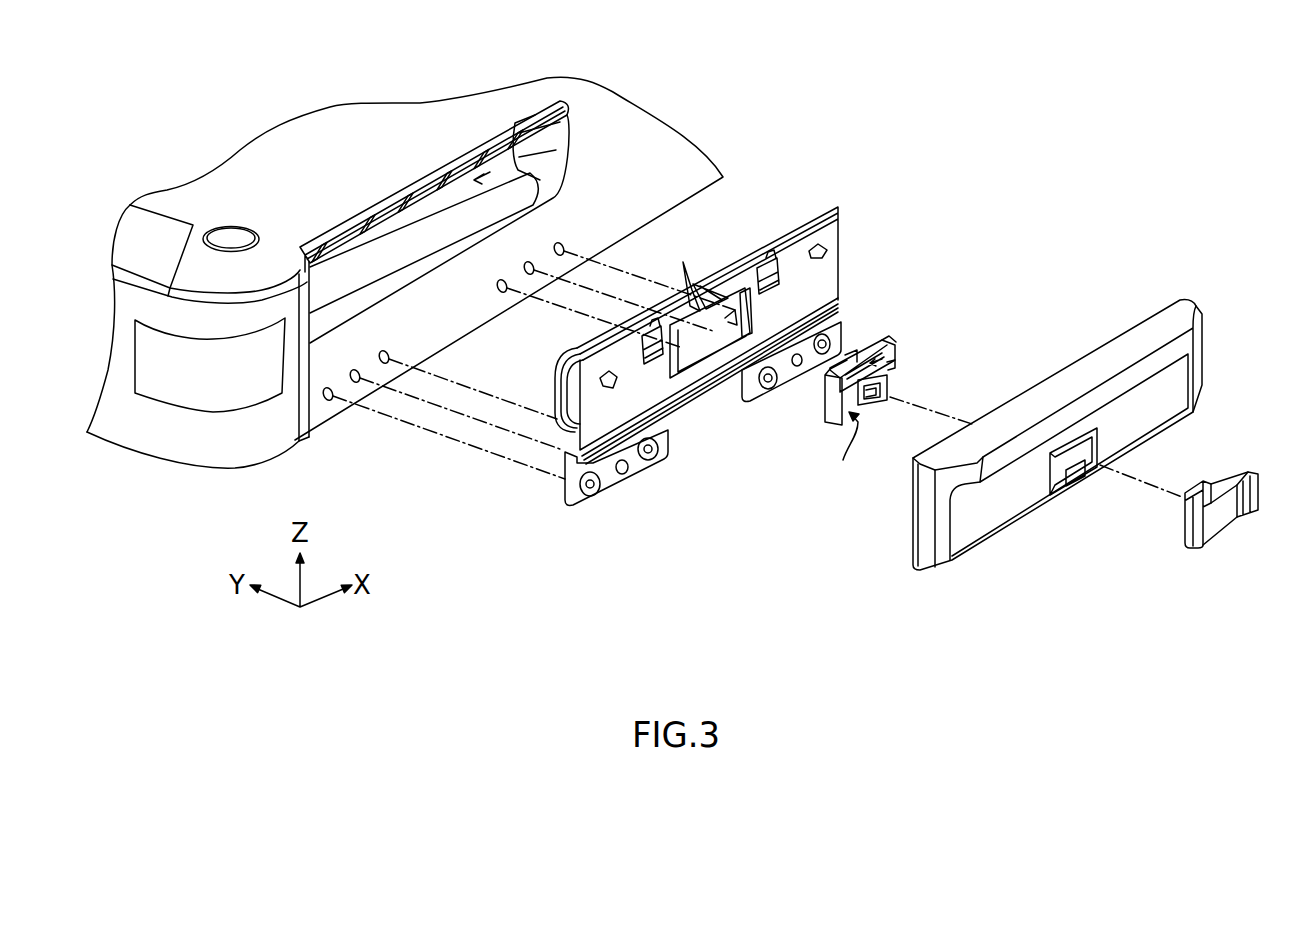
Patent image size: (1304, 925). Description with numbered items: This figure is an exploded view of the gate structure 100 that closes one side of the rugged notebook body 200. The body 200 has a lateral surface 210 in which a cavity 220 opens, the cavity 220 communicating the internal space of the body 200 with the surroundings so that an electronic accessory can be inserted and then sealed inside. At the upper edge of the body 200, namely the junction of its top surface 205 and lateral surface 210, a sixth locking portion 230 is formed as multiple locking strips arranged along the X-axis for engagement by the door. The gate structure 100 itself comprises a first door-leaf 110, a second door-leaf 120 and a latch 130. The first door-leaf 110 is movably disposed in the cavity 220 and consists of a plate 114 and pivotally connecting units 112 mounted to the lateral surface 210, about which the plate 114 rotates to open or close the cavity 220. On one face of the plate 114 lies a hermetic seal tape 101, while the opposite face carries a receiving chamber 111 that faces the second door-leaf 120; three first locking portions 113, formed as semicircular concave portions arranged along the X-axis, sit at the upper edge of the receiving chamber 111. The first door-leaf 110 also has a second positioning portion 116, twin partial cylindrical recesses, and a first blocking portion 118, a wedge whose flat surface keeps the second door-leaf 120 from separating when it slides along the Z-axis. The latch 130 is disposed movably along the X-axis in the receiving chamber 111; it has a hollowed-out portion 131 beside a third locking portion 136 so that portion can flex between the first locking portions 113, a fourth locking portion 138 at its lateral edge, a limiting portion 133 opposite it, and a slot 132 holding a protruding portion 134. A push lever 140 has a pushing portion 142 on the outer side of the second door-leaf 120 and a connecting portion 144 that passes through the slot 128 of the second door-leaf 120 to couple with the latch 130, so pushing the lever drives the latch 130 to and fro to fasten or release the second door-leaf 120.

The gate structure 100 is at (1065, 210).
The hermetic seal tape 101 is at (558, 385).
The first door-leaf 110 is at (838, 265).
The receiving chamber 111 is at (747, 287).
The pivotally connecting units 112 is at (752, 388).
The first locking portions 113 is at (712, 302).
The plate 114 is at (638, 390).
The second positioning portion 116 is at (657, 342).
The first blocking portion 118 is at (603, 370).
The second door-leaf 120 is at (1204, 372).
The slot 128 is at (1080, 492).
The latch 130 is at (808, 440).
The hollowed-out portion 131 is at (893, 343).
The slot 132 is at (893, 392).
The limiting portion 133 is at (828, 384).
The protruding portion 134 is at (878, 402).
The third locking portion 136 is at (852, 355).
The fourth locking portion 138 is at (895, 356).
The push lever 140 is at (1183, 578).
The pushing portion 142 is at (1225, 519).
The connecting portion 144 is at (1200, 477).
The body 200 is at (130, 240).
The top surface 205 is at (300, 165).
The lateral surfaces 210 is at (628, 152).
The cavity 220 is at (515, 125).
The sixth locking portion 230 is at (413, 190).